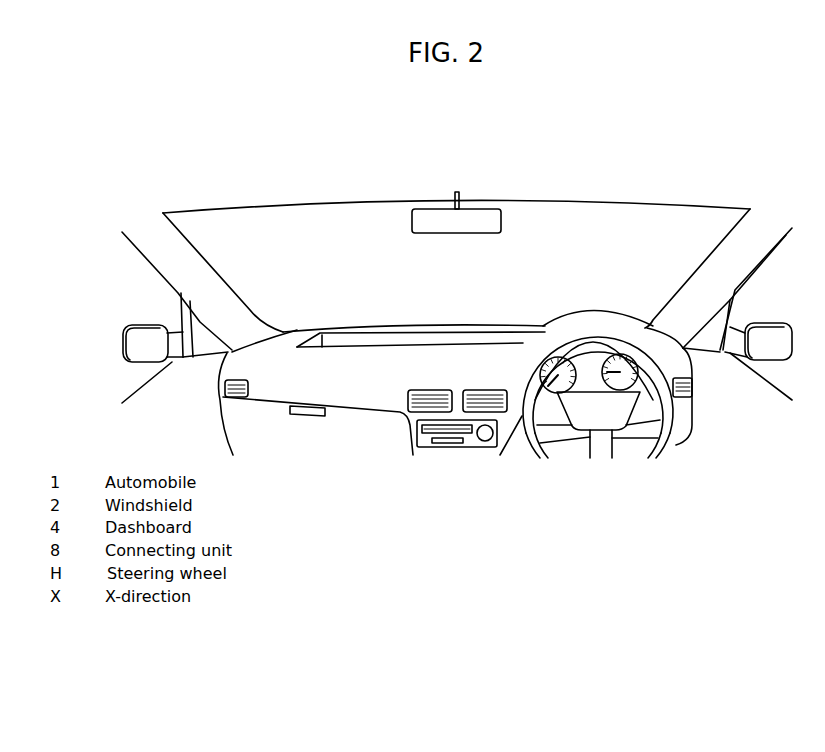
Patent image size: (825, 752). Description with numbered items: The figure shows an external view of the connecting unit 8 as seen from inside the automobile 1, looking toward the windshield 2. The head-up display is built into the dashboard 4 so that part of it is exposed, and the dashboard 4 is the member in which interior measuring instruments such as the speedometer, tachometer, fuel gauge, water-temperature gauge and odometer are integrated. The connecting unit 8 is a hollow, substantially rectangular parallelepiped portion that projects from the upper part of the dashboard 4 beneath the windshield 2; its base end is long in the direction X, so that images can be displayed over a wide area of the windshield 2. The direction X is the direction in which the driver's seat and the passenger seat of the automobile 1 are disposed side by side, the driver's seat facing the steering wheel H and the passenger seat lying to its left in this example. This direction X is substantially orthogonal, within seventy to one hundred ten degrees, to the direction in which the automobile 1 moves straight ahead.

The automobile 1 is at (293, 176).
The windshield 2 is at (630, 207).
The dashboard 4 is at (545, 322).
The connecting unit 8 is at (312, 332).
The steering wheel H is at (665, 408).
The direction X is at (488, 481).